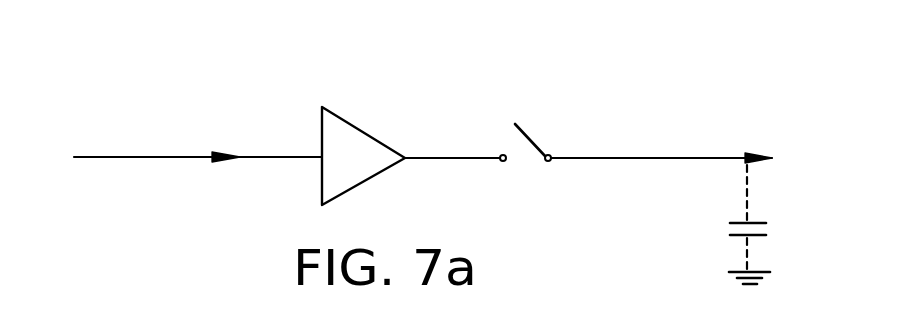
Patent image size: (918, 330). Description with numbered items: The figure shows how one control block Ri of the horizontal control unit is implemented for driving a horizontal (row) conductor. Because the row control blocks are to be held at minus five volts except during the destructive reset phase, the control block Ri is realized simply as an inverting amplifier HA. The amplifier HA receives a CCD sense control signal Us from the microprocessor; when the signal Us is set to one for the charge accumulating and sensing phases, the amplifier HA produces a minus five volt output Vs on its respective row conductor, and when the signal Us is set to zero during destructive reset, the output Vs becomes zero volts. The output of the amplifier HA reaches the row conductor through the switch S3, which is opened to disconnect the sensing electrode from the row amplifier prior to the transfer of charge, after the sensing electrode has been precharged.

The CCD sense control signal Us is at (198, 143).
The inverting amplifier HA is at (363, 156).
The control block Ri is at (435, 67).
The switch S3 is at (530, 153).
The output voltage Vs is at (682, 163).